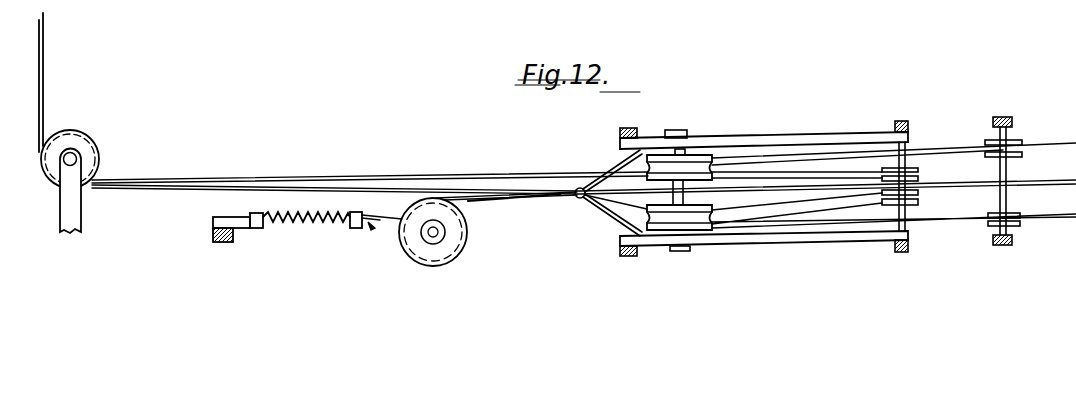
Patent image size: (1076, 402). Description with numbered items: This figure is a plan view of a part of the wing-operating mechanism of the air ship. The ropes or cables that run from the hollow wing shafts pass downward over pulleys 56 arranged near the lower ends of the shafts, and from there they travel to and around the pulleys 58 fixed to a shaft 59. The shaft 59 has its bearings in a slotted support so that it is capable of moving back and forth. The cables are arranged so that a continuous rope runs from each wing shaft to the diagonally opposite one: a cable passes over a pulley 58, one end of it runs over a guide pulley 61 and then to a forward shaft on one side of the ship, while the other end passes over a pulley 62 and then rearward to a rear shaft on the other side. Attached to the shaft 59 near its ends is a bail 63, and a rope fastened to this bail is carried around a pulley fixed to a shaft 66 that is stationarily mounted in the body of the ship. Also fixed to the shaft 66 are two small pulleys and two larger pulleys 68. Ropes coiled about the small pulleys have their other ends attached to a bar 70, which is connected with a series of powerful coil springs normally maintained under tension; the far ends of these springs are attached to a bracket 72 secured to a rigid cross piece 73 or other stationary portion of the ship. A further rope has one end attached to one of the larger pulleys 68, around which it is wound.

The pulley 56 is at (87, 143).
The pulley 58 is at (716, 156).
The shaft 59 is at (681, 127).
The guide pulley 61 is at (1020, 141).
The pulley 62 is at (918, 168).
The bail 63 is at (620, 165).
The shaft 66 is at (430, 240).
The larger pulley 68 is at (460, 251).
The bar 70 is at (312, 219).
The bracket 72 is at (213, 223).
The cross piece 73 is at (226, 241).